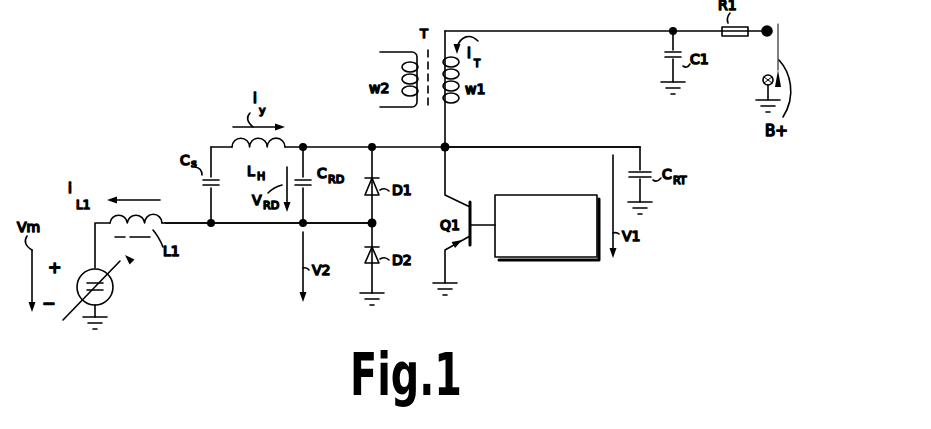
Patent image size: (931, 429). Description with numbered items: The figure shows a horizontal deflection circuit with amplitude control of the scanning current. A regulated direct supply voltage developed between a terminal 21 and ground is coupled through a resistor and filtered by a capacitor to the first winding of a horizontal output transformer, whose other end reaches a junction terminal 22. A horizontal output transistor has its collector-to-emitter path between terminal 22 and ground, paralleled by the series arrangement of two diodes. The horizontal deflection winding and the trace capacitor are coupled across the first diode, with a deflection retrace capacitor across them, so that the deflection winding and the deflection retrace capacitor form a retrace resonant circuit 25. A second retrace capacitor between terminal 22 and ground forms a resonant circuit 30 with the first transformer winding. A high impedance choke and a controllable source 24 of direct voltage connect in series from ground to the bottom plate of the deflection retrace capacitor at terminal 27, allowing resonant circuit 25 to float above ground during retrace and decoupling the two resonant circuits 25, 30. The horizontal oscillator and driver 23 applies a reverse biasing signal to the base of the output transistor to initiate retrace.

The terminal 21 is at (768, 26).
The junction terminal 22 is at (448, 145).
The horizontal oscillator and driver 23 is at (567, 257).
The controllable source of direct voltage 24 is at (113, 290).
The retrace resonant circuit 25 is at (276, 253).
The terminal 27 is at (377, 222).
The resonant circuit 30 is at (574, 136).